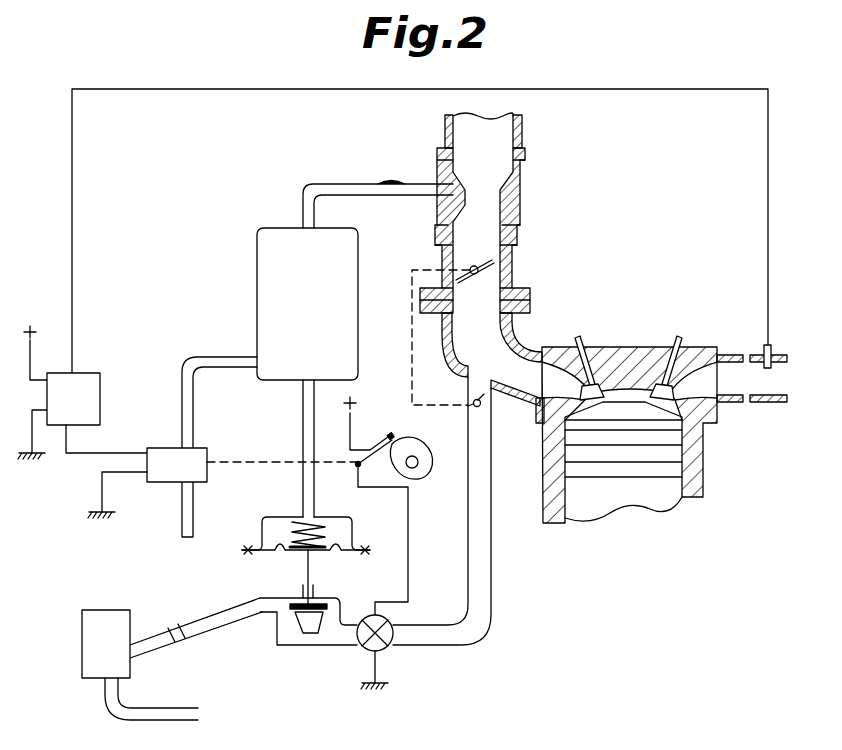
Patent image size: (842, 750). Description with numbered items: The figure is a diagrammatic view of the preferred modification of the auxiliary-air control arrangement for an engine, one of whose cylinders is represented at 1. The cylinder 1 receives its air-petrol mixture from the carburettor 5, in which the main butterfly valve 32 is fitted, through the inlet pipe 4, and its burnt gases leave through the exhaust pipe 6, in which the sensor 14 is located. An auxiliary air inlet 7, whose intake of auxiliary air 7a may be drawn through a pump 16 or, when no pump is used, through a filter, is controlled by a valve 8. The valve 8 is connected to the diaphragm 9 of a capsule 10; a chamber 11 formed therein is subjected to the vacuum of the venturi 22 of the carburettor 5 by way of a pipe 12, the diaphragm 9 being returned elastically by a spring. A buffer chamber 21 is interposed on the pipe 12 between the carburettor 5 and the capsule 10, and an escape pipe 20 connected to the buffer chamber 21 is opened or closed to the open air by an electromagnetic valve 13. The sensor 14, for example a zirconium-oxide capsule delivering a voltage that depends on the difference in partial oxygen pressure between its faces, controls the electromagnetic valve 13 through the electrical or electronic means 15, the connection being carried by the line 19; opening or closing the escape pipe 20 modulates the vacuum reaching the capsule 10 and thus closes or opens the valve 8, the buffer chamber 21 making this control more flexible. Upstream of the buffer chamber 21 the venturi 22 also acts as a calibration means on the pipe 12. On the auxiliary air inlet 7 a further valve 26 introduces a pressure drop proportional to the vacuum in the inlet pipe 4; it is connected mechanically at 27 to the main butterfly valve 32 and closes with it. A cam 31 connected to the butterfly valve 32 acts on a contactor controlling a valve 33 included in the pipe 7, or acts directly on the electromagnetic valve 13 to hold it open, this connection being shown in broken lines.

The cylinder 1 is at (657, 472).
The inlet pipe 4 is at (518, 398).
The carburettor 5 is at (478, 189).
The exhaust pipe 6 is at (745, 403).
The auxiliary air inlet 7 is at (491, 528).
The intake of auxiliary air 7a is at (220, 614).
The valve 8 is at (308, 632).
The diaphragm 9 is at (333, 555).
The capsule 10 is at (347, 517).
The chamber 11 is at (352, 528).
The pipe 12 is at (325, 182).
The electromagnetic valve 13 is at (160, 482).
The sensor 14 is at (763, 350).
The threshold detector 15 is at (95, 388).
The pump 16 is at (82, 648).
The electrical line 19 is at (232, 88).
The escape pipe 20 is at (230, 343).
The buffer chamber 21 is at (262, 263).
The venturi 22 is at (393, 183).
The valve 26 is at (472, 410).
The mechanical connection 27 is at (411, 358).
The cam 31 is at (427, 454).
The main butterfly valve 32 is at (498, 271).
The valve 33 is at (383, 646).